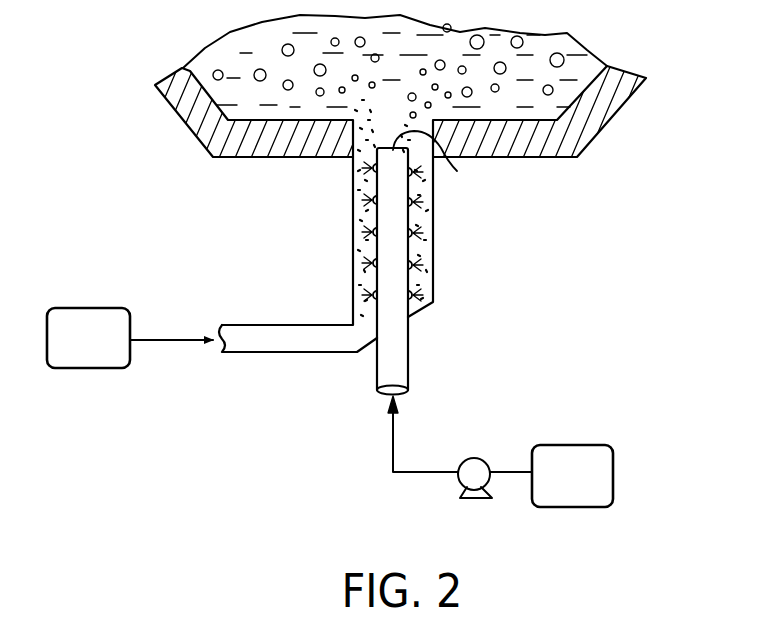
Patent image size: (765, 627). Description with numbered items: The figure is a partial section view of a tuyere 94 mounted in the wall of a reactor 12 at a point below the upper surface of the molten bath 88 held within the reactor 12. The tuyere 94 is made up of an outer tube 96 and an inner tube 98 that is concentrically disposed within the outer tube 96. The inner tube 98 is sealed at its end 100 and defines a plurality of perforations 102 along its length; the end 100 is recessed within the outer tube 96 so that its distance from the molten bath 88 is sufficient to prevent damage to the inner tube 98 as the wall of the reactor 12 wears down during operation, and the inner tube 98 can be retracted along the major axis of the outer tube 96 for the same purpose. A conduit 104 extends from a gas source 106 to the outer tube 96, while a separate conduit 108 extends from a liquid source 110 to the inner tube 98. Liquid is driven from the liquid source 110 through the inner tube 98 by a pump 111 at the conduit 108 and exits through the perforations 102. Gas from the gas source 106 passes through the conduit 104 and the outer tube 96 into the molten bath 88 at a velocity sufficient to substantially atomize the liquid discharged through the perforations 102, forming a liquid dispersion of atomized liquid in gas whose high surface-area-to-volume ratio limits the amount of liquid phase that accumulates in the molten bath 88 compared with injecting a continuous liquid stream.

The reactor 12 is at (600, 133).
The molten bath 88 is at (277, 65).
The tuyere 94 is at (350, 249).
The outer tube 96 is at (433, 276).
The inner tube 98 is at (412, 219).
The end 100 is at (451, 164).
The perforations 102 is at (360, 226).
The conduit 104 is at (167, 346).
The gas source 106 is at (110, 351).
The conduit 108 is at (412, 478).
The liquid source 110 is at (546, 489).
The pump 111 is at (478, 458).